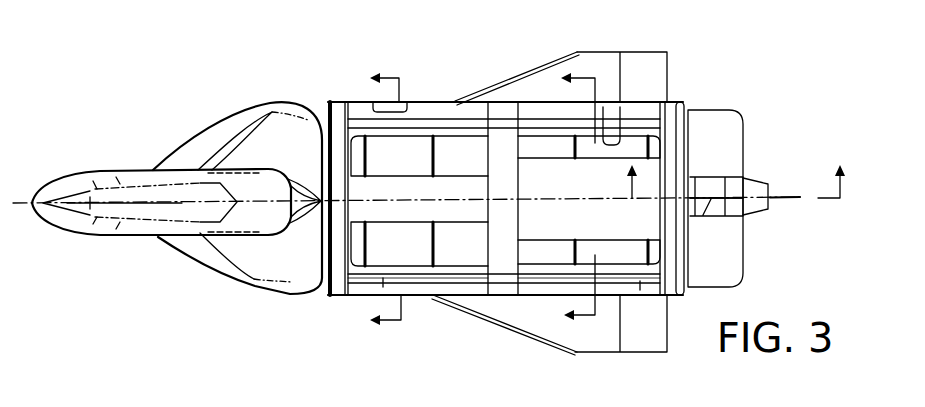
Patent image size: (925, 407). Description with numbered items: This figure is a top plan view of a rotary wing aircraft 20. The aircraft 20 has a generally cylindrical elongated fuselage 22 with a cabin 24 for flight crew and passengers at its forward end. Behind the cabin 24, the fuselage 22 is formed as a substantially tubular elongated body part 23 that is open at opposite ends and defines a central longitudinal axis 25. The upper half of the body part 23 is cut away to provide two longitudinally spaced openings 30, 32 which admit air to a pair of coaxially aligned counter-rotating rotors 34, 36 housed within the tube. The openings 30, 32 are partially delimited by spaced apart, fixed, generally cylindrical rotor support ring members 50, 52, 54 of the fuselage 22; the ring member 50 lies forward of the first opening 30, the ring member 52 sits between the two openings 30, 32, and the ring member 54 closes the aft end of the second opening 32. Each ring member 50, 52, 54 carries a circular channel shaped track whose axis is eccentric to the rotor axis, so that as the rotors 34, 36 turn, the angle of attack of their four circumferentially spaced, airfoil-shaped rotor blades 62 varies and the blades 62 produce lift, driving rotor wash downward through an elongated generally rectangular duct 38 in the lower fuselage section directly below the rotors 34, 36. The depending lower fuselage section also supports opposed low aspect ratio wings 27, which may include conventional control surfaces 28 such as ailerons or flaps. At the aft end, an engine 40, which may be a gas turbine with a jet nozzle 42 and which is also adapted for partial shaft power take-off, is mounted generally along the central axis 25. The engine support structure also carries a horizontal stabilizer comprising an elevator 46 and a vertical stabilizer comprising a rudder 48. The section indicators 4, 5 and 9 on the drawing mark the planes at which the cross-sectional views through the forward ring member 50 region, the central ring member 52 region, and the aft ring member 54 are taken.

The rotary wing aircraft 20 is at (688, 72).
The fuselage 22 is at (288, 104).
The tubular elongated body part 23 is at (318, 298).
The cabin 24 is at (247, 168).
The central longitudinal axis 25 is at (790, 193).
The low aspect ratio wings 27 is at (575, 34).
The control surfaces 28 is at (640, 52).
The first opening 30 is at (413, 146).
The second opening 32 is at (614, 143).
The first rotor 34 is at (423, 272).
The second rotor 36 is at (620, 273).
The rectangular duct 38 is at (413, 145).
The engine 40 is at (715, 177).
The jet nozzle 42 is at (760, 213).
The elevator 46 is at (735, 248).
The rudder 48 is at (708, 208).
The rotor support ring member 50 is at (340, 100).
The rotor support ring member 52 is at (505, 101).
The rotor support ring member 54 is at (680, 98).
The rotor blades 62 is at (447, 118).
The section line 4- 4 is at (375, 200).
The section line 5- 5 is at (568, 197).
The section line 9- 9 is at (727, 179).